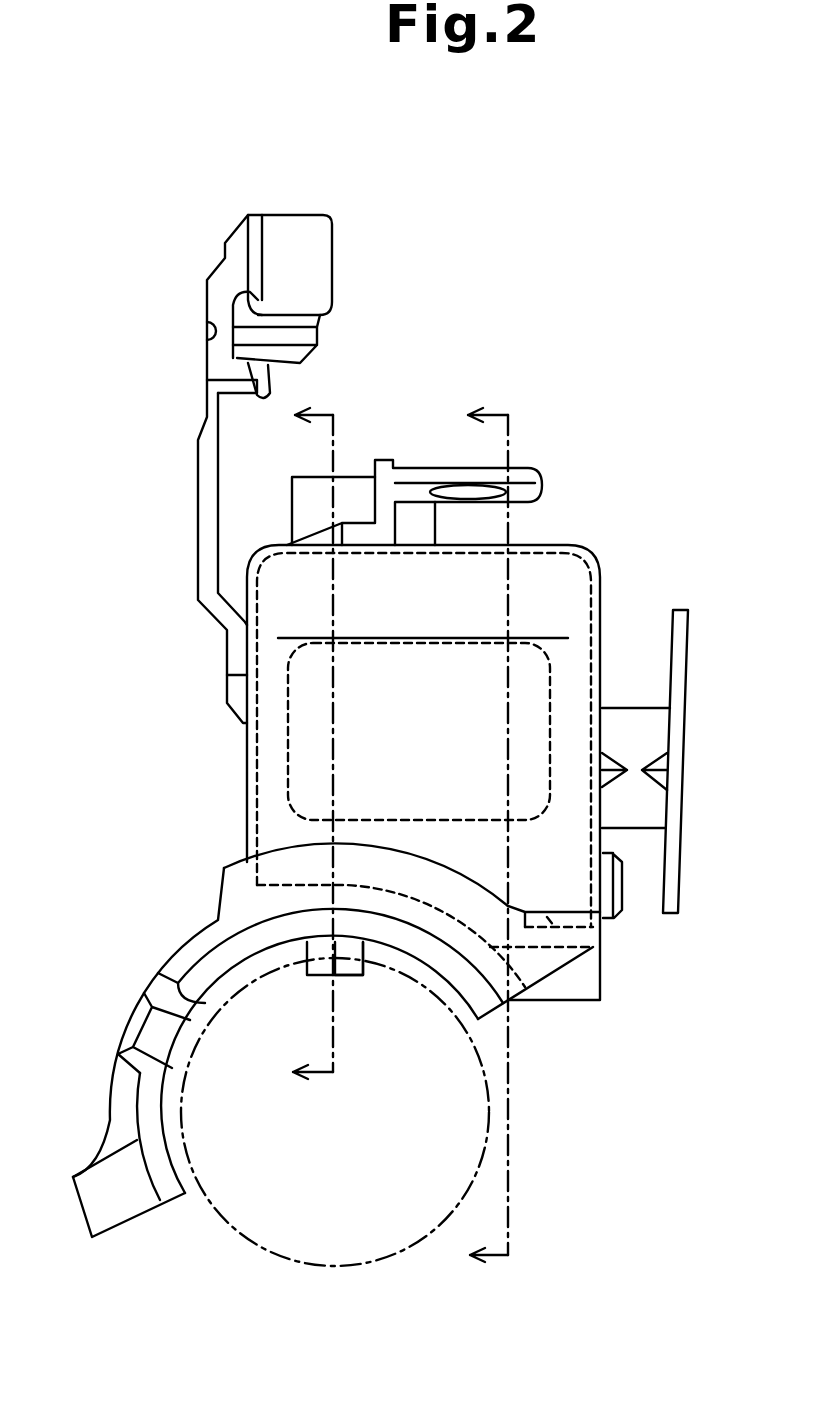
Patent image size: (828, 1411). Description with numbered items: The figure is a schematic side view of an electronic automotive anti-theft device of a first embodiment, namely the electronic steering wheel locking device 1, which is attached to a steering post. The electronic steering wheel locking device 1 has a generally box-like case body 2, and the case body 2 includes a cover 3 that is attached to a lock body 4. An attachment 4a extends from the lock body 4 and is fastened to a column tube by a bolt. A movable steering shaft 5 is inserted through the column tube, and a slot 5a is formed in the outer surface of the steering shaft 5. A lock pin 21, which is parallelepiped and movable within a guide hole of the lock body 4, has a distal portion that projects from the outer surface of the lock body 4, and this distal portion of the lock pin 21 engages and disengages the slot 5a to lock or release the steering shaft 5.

The electronic steering wheel locking device 1 is at (565, 286).
The case body 2 is at (602, 578).
The cover 3 is at (255, 787).
The lock body 4 is at (467, 993).
The attachment 4a is at (123, 1106).
The steering shaft 5 is at (318, 1268).
The slot 5a is at (353, 974).
The lock pin 21 is at (317, 974).